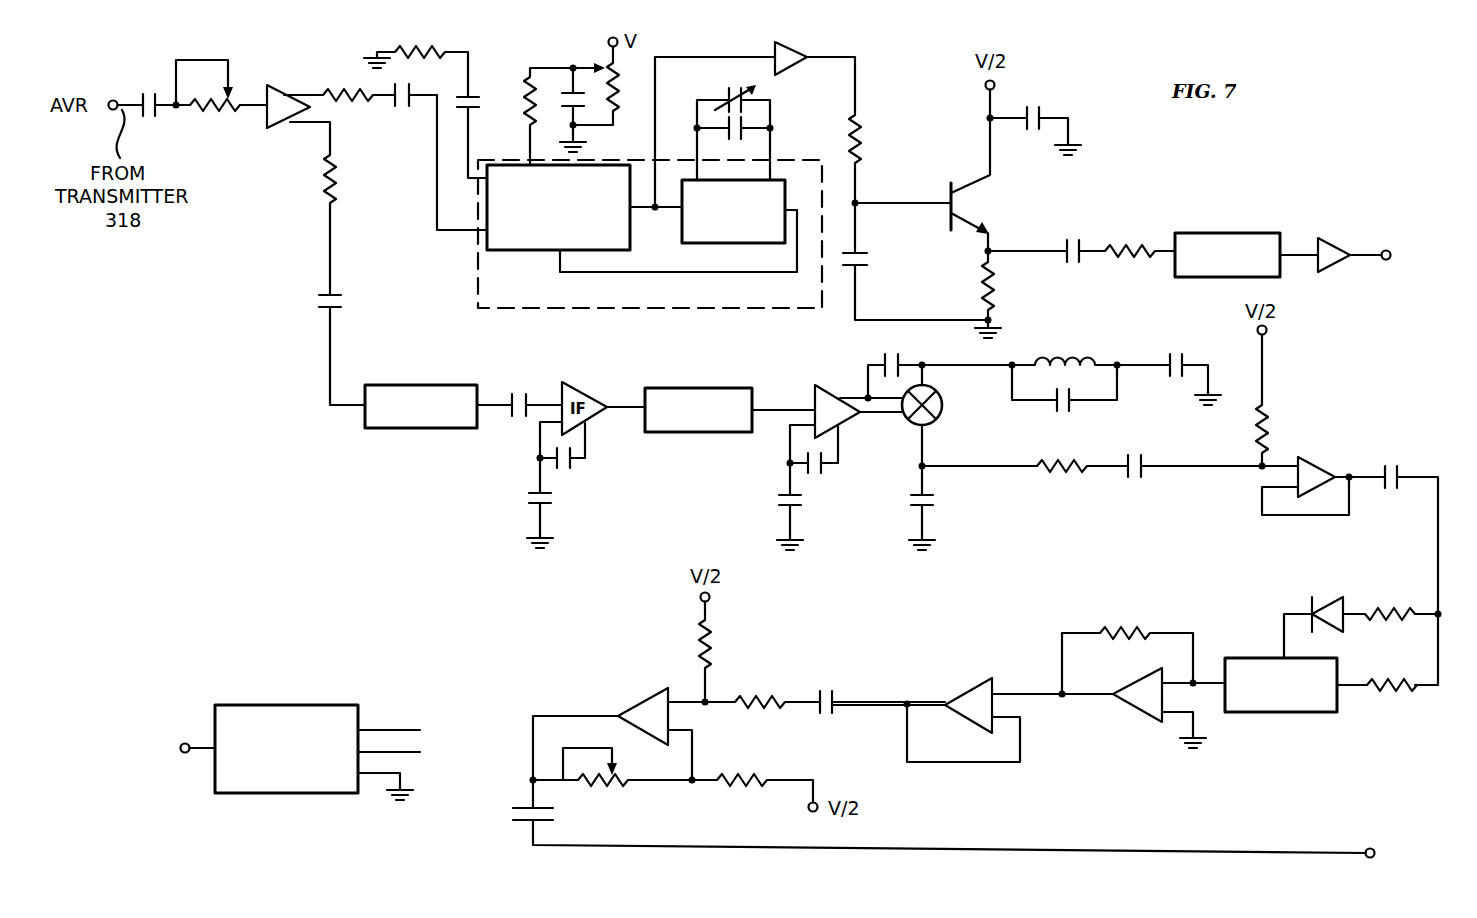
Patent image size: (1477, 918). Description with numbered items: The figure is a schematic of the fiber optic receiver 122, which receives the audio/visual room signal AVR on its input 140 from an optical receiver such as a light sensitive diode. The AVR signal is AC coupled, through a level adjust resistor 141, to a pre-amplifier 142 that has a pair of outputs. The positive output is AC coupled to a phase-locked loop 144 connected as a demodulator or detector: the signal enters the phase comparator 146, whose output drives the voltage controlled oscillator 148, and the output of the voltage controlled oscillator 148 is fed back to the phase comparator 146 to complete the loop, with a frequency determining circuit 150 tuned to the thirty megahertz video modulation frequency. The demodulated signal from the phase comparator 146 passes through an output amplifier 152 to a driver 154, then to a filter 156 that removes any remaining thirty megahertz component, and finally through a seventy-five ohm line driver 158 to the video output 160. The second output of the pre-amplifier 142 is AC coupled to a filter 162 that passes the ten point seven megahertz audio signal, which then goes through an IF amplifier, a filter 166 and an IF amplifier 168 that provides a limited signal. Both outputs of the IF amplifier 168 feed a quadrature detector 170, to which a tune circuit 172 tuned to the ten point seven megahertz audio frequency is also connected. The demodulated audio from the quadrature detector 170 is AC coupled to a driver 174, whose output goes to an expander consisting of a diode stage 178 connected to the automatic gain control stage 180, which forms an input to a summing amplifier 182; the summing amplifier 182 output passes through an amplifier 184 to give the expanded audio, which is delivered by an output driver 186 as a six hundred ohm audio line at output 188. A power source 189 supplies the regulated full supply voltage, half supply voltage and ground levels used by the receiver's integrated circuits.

The fiber optic receiver 122 is at (326, 487).
The input 140 is at (115, 96).
The potentiometer 141 is at (236, 81).
The pre-amplifier 142 is at (267, 118).
The phase-locked loop 144 is at (599, 313).
The phase comparator 146 is at (532, 236).
The voltage controlled oscillator 148 is at (716, 228).
The frequency determining circuit 150 is at (791, 116).
The output amplifier 152 is at (775, 51).
The driver 154 is at (1018, 210).
The filter 156 is at (1244, 233).
The line driver 158 is at (1336, 251).
The video output 160 is at (1362, 256).
The filter 162 is at (449, 359).
The filter 166 is at (720, 366).
The IF amplifier 168 is at (831, 386).
The quadrature detector 170 is at (938, 414).
The tune circuit 172 is at (1118, 347).
The driver 174 is at (1318, 463).
The diode stage 178 is at (1326, 600).
The automatic gain control stage 180 is at (1283, 700).
The summing amplifier 182 is at (1139, 715).
The amplifier 184 is at (967, 690).
The output driver 186 is at (640, 700).
The output 188 is at (1366, 849).
The power source 189 is at (326, 706).